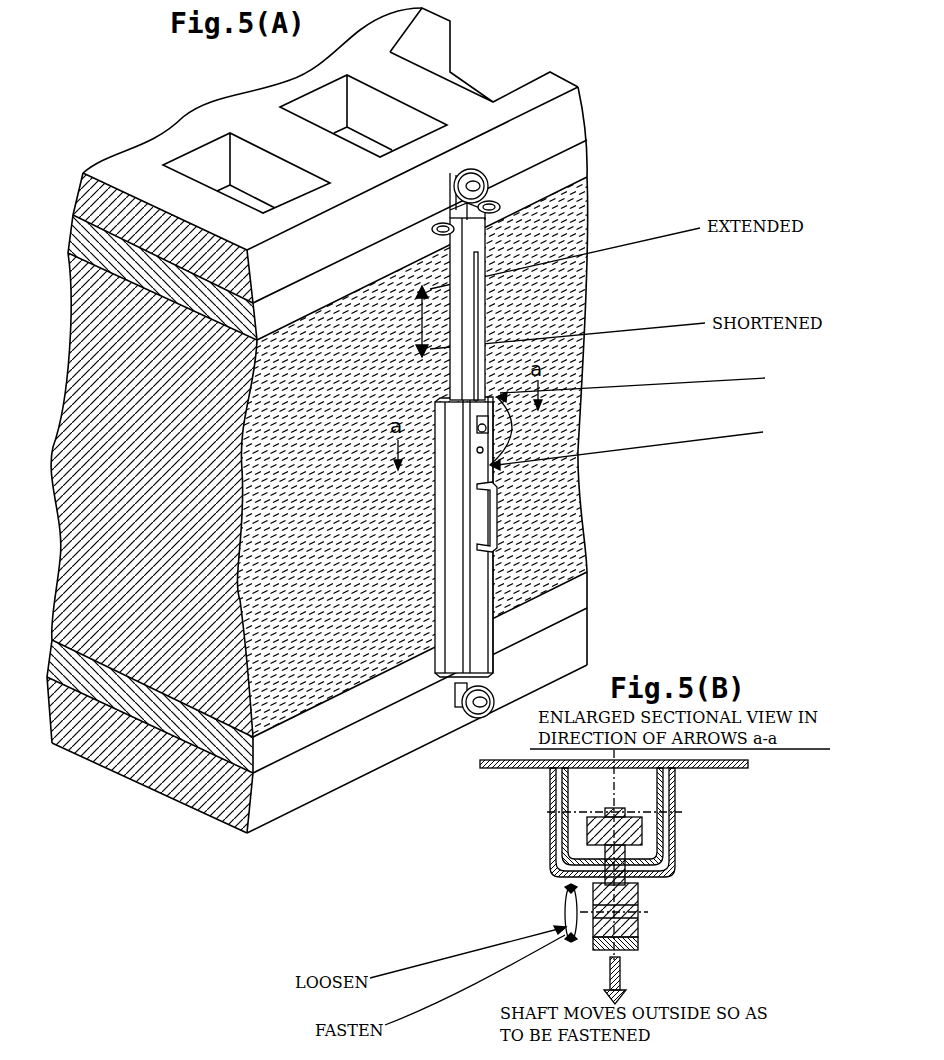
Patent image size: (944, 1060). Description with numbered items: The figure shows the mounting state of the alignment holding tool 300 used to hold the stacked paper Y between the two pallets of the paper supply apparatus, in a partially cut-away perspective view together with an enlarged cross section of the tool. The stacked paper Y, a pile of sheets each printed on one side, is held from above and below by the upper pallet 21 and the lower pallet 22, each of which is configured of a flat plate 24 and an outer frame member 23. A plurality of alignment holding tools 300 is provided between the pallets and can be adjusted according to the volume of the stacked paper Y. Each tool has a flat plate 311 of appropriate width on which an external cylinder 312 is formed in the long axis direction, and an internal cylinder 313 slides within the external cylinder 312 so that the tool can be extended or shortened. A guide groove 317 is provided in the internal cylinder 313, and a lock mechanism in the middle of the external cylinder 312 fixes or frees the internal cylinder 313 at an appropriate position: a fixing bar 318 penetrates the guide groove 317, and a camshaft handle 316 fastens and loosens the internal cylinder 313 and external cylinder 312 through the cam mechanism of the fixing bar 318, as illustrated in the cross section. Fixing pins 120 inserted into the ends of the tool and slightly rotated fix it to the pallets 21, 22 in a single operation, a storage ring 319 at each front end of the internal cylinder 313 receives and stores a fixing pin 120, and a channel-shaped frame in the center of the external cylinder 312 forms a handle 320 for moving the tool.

In FIG. 5A, the fixing pin 120 is at (490, 173).
In FIG. 5B, the fixing pin 120 is at (552, 800).
In FIG. 5A, the upper pallet 21 is at (660, 88).
In FIG. 5A, the lower pallet 22 is at (660, 593).
In FIG. 5A, the outer frame member 23 is at (557, 123).
In FIG. 5A, the flat plate 24 is at (567, 168).
In FIG. 5A, the alignment holding tool 300 is at (730, 364).
In FIG. 5A, the flat plate 311 is at (500, 512).
In FIG. 5B, the flat plate 311 is at (707, 770).
In FIG. 5A, the external cylinder 312 is at (443, 573).
In FIG. 5B, the external cylinder 312 is at (550, 857).
In FIG. 5A, the internal cylinder 313 is at (562, 286).
In FIG. 5B, the internal cylinder 313 is at (565, 838).
In FIG. 5A, the camshaft handle 316 is at (487, 421).
In FIG. 5B, the camshaft handle 316 is at (640, 927).
In FIG. 5A, the guide groove 317 is at (485, 275).
In FIG. 5B, the fixing bar 318 is at (560, 907).
In FIG. 5A, the storage ring 319 is at (503, 207).
In FIG. 5A, the handle 320 is at (500, 468).
In FIG. 5A, the stacked paper Y is at (540, 227).